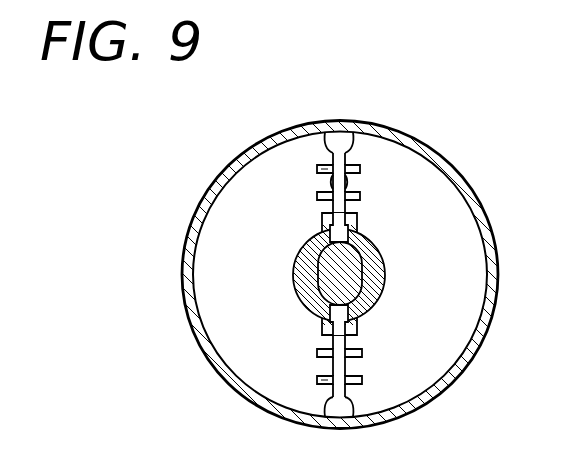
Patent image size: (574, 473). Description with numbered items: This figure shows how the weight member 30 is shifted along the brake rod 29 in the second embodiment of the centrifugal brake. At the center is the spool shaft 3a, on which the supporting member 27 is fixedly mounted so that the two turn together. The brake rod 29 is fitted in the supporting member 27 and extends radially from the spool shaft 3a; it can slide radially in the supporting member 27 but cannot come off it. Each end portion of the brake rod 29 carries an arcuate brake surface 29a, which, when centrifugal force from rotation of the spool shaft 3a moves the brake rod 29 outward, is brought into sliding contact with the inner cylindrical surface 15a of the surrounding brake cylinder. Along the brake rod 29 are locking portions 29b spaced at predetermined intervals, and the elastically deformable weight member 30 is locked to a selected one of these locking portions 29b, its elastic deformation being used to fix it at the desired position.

The inner cylindrical surface 15a is at (402, 141).
The brake rod 29 is at (333, 150).
The brake surface 29a is at (339, 130).
The locking portions 29b is at (320, 183).
The weight member 30 is at (359, 196).
The supporting member 27 is at (375, 248).
The spool shaft 3a is at (354, 283).